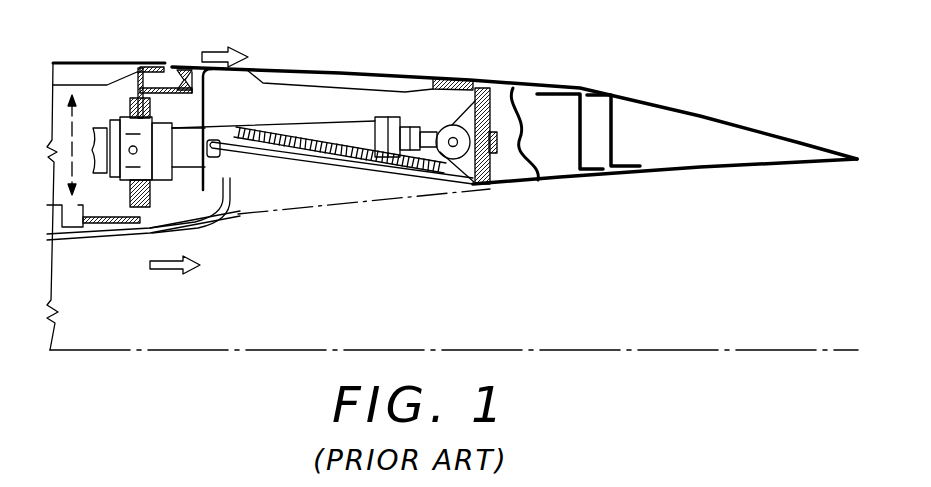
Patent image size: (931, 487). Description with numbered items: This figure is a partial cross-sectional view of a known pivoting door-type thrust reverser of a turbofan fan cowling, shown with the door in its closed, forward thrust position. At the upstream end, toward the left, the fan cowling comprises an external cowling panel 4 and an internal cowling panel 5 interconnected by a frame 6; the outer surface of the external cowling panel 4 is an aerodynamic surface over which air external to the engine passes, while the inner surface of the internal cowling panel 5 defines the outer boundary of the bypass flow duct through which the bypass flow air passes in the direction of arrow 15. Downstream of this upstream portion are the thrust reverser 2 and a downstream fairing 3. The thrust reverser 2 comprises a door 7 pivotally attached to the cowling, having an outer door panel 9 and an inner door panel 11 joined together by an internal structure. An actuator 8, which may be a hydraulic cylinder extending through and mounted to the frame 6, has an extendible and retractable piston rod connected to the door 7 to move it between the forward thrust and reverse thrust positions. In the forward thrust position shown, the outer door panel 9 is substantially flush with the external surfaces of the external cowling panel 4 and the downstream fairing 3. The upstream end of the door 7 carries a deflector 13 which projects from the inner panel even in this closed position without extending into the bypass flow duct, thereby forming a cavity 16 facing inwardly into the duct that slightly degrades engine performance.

The thrust reverser 2 is at (468, 74).
The downstream fairing 3 is at (646, 136).
The external cowling panel 4 is at (84, 74).
The internal cowling panel 5 is at (72, 232).
The frame 6 is at (133, 205).
The door 7 is at (362, 88).
The actuator 8 is at (270, 128).
The outer door panel 9 is at (405, 80).
The inner door panel 11 is at (344, 167).
The deflector 13 is at (203, 188).
The arrow 15 is at (170, 268).
The cavity 16 is at (272, 198).